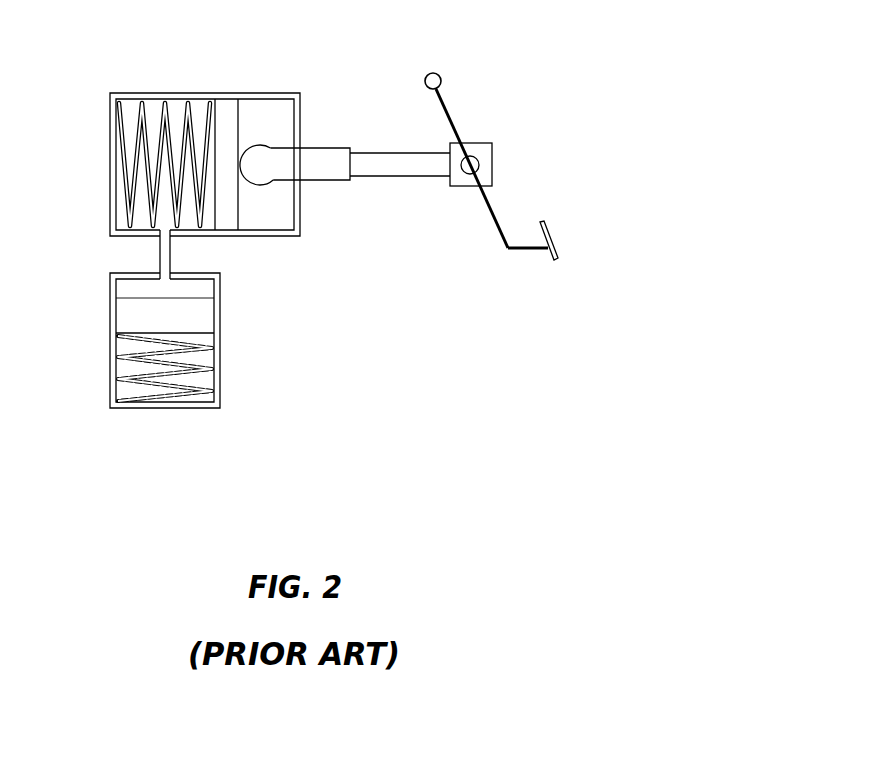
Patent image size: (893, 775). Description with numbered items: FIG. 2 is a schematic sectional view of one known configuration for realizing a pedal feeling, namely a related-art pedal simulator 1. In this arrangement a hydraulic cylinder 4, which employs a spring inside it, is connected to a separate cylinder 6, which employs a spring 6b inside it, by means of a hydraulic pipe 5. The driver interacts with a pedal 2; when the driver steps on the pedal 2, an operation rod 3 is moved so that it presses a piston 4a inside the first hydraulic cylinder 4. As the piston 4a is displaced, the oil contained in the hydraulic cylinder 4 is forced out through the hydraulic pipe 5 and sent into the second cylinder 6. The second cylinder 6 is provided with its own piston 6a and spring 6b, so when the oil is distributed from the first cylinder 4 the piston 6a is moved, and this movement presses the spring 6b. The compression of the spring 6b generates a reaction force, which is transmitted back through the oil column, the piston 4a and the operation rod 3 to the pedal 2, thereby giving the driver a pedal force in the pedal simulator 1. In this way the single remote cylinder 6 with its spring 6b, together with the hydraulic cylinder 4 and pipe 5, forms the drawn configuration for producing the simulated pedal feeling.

The pedal simulator 1 is at (467, 90).
The pedal 2 is at (454, 119).
The operation rod 3 is at (399, 180).
The hydraulic cylinder 4 is at (262, 97).
The piston 4a is at (227, 106).
The hydraulic pipe 5 is at (172, 252).
The cylinder 6 is at (113, 347).
The piston 6a is at (138, 307).
The spring 6b is at (167, 394).